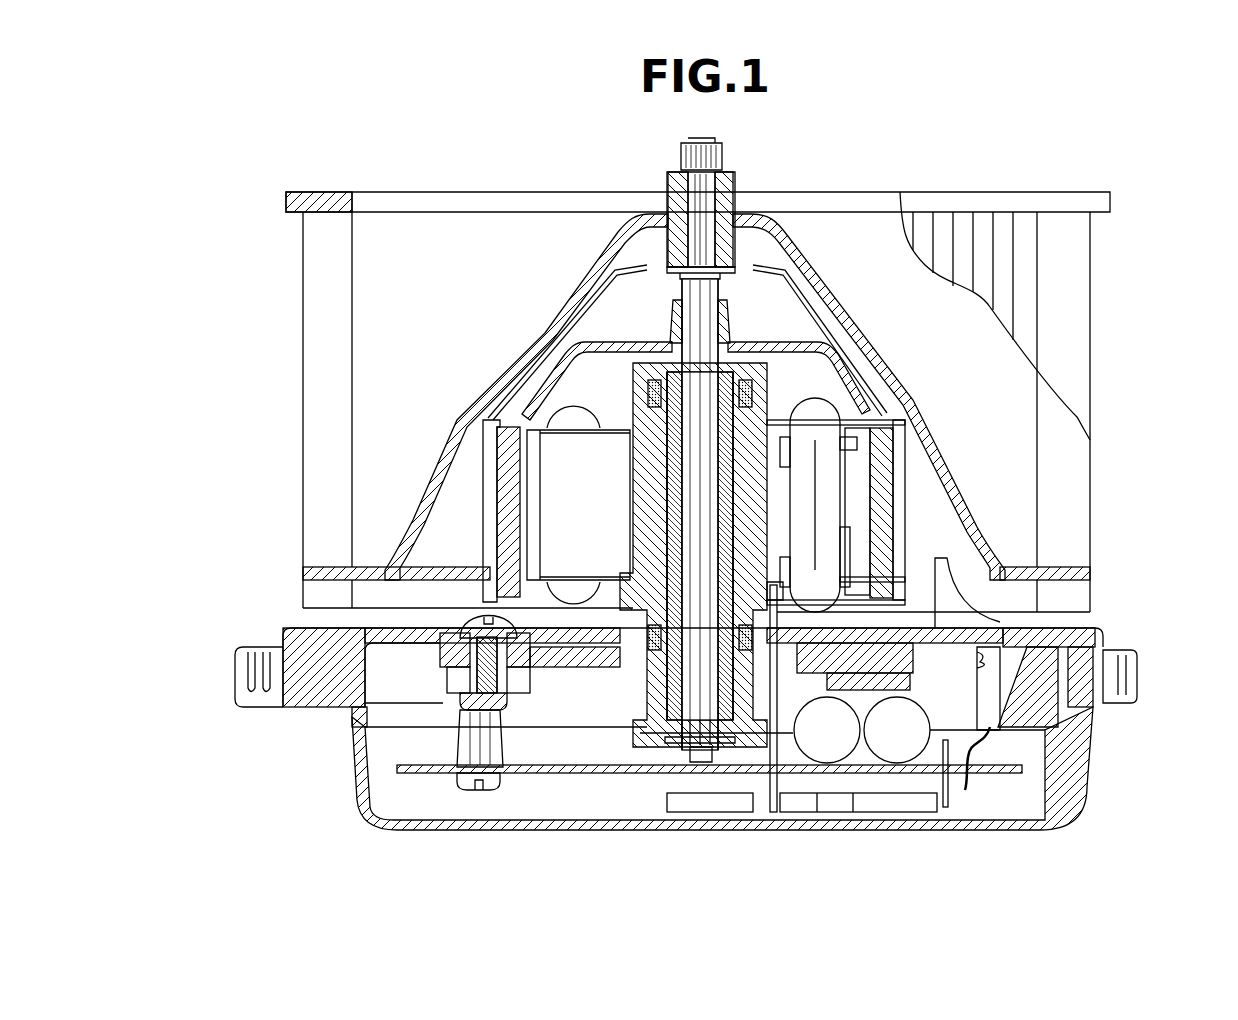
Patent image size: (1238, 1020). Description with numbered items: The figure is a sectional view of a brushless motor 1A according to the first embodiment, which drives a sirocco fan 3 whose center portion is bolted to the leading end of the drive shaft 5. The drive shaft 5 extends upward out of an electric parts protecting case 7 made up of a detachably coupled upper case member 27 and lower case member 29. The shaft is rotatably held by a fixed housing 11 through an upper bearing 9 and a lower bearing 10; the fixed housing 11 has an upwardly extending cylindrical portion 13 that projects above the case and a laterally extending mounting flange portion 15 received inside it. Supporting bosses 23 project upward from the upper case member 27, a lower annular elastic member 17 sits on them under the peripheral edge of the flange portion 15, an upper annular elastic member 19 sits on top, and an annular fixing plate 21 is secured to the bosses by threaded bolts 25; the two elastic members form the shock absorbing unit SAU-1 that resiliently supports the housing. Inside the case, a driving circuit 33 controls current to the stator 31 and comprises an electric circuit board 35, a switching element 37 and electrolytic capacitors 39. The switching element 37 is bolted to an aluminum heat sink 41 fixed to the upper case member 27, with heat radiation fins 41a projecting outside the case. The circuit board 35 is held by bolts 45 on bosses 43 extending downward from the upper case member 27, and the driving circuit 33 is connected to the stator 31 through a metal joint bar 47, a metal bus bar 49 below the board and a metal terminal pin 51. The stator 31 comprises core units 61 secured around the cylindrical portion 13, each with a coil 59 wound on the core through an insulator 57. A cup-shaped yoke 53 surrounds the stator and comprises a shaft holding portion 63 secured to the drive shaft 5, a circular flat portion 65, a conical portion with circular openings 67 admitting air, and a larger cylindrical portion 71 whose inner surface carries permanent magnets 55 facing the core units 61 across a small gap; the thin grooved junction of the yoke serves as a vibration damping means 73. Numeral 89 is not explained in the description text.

The brushless motor 1A is at (776, 176).
The sirocco fan 3 is at (1008, 205).
The drive shaft 5 is at (688, 297).
The electric parts protecting case 7 is at (1192, 708).
The upper bearing 9 is at (650, 395).
The lower bearing 10 is at (650, 660).
The fixed housing 11 is at (572, 497).
The cylindrical portion 13 is at (646, 512).
The mounting flange portion 15 is at (580, 653).
The lower annular elastic member 17 is at (453, 663).
The upper annular elastic member 19 is at (445, 643).
The annular fixing plate 21 is at (453, 630).
The supporting bosses 23 is at (460, 705).
The threaded bolts 25 is at (497, 621).
The upper case member 27 is at (1115, 707).
The lower case member 29 is at (1090, 785).
The stator 31 is at (497, 408).
The driving circuit 33 is at (1010, 790).
The electric circuit board 35 is at (547, 773).
The switching element 37 is at (990, 675).
The electrolytic capacitors 39 is at (888, 755).
The heat sink 41 is at (1010, 690).
The heat radiation fins 41a is at (935, 557).
The bosses 43 is at (470, 740).
The bolts 45 is at (465, 782).
The metal joint bar 47 is at (950, 790).
The metal bus bar 49 is at (905, 812).
The metal terminal pin 51 is at (773, 812).
The yoke 53 is at (900, 432).
The permanent magnets 55 is at (880, 480).
The insulator 57 is at (852, 500).
The coil 59 is at (540, 405).
The core units 61 is at (530, 480).
The shaft holding portion 63 is at (735, 308).
The circular flat portion 65 is at (762, 345).
The circular openings 67 is at (838, 372).
The larger cylindrical portion 71 is at (903, 453).
The vibration damping means 73 is at (470, 414).
The magnet 89 is at (908, 410).
The shock absorbing unit SAU-1 is at (410, 615).